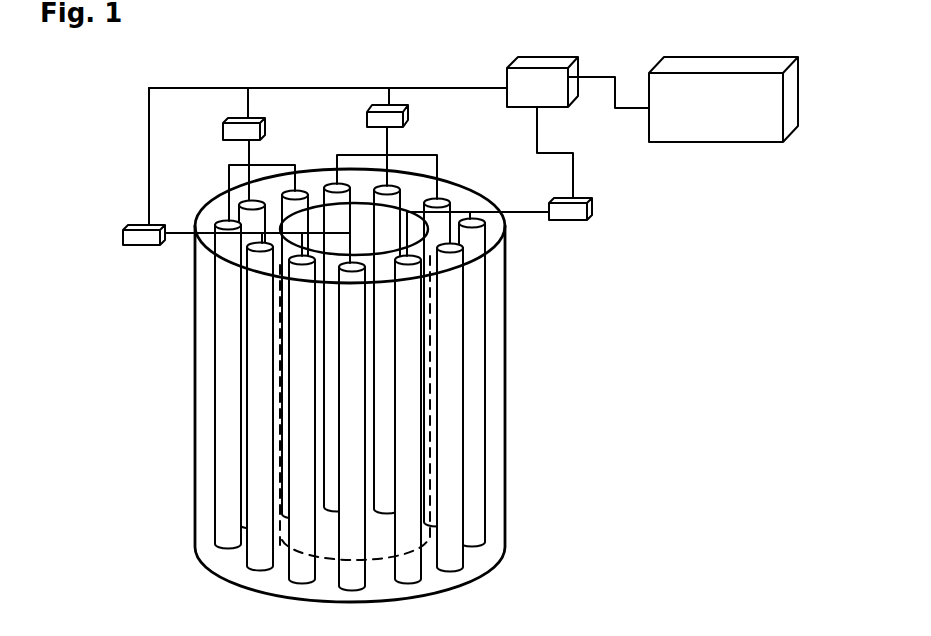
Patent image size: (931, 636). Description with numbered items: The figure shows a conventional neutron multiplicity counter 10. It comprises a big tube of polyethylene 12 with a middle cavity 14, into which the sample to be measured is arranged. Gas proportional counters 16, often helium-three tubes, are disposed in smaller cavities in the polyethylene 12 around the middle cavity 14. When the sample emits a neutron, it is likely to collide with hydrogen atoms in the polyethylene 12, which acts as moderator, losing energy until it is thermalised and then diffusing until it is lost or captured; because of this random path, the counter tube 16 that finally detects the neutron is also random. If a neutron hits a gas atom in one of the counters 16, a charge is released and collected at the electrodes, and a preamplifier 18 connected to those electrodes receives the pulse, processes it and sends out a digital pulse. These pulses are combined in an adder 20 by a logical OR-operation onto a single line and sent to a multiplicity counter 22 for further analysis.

The neutron multiplicity counter 10 is at (460, 329).
The tube of polyethylene 12 is at (507, 418).
The middle cavity 14 is at (325, 227).
The gas proportional counters 16 is at (243, 383).
The preamplifier 18 is at (223, 134).
The adder 20 is at (552, 108).
The multiplicity counter 22 is at (690, 143).